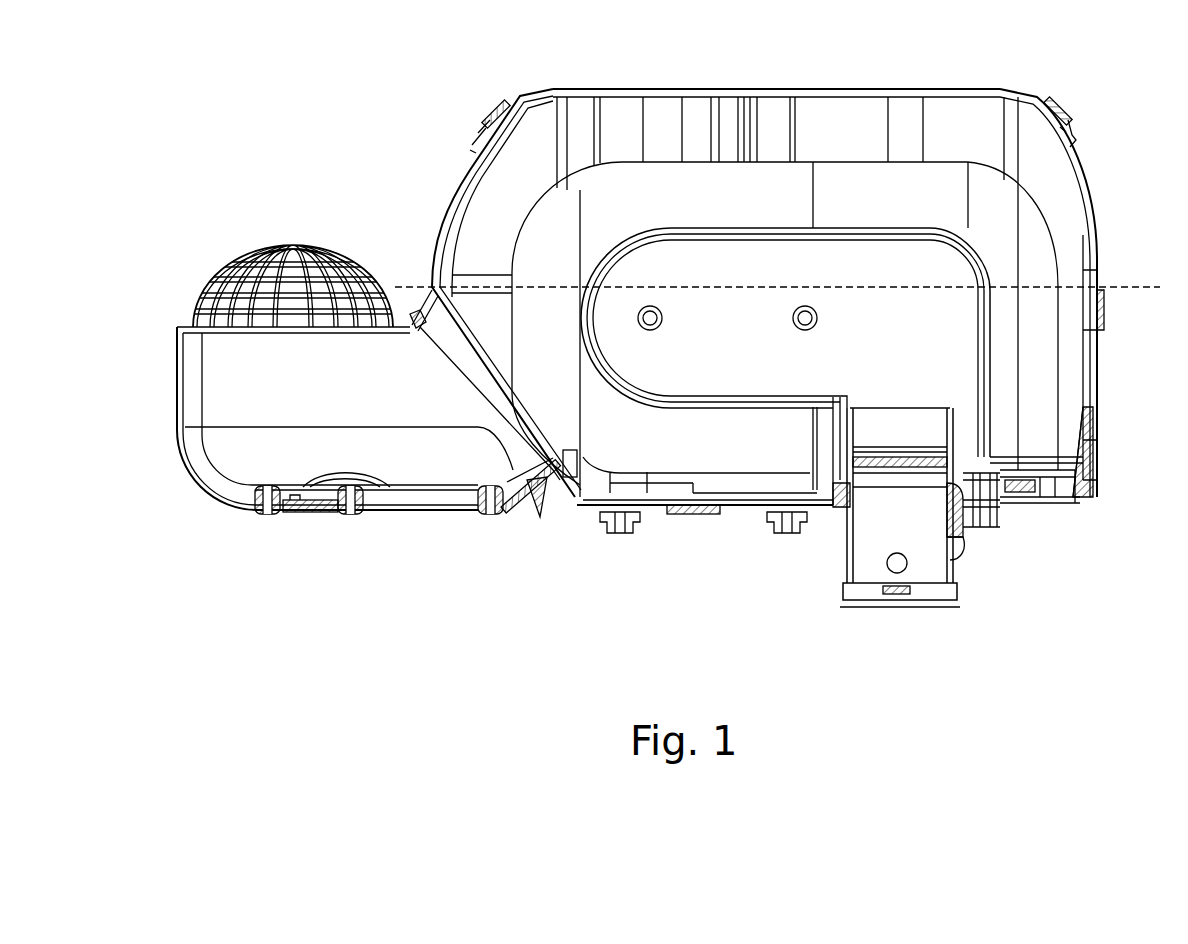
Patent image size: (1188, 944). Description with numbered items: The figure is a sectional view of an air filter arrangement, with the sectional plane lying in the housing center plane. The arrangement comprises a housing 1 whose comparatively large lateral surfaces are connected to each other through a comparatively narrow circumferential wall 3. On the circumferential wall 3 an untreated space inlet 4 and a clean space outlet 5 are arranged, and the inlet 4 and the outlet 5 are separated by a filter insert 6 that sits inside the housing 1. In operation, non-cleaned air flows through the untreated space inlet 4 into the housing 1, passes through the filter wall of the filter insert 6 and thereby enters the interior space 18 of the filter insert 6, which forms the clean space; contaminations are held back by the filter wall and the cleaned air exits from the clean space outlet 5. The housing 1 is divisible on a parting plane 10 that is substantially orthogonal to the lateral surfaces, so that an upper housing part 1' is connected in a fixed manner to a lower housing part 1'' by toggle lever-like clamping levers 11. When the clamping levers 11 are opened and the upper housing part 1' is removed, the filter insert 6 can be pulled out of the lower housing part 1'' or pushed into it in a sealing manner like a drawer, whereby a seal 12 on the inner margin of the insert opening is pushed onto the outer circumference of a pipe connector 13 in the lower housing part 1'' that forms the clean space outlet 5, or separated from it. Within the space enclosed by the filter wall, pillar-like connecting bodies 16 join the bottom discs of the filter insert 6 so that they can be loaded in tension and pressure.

The housing 1 is at (774, 268).
The upper housing part 1' is at (482, 293).
The lower housing part 1'' is at (1124, 442).
The circumferential wall 3 is at (1084, 190).
The untreated space inlet 4 is at (290, 243).
The clean space outlet 5 is at (862, 580).
The filter insert 6 is at (828, 152).
The parting plane 10 is at (850, 290).
The clamping levers 11 is at (490, 112).
The seal 12 is at (946, 478).
The pipe connector 13 is at (847, 530).
The connecting bodies 16 is at (662, 320).
The interior space 18 is at (928, 274).